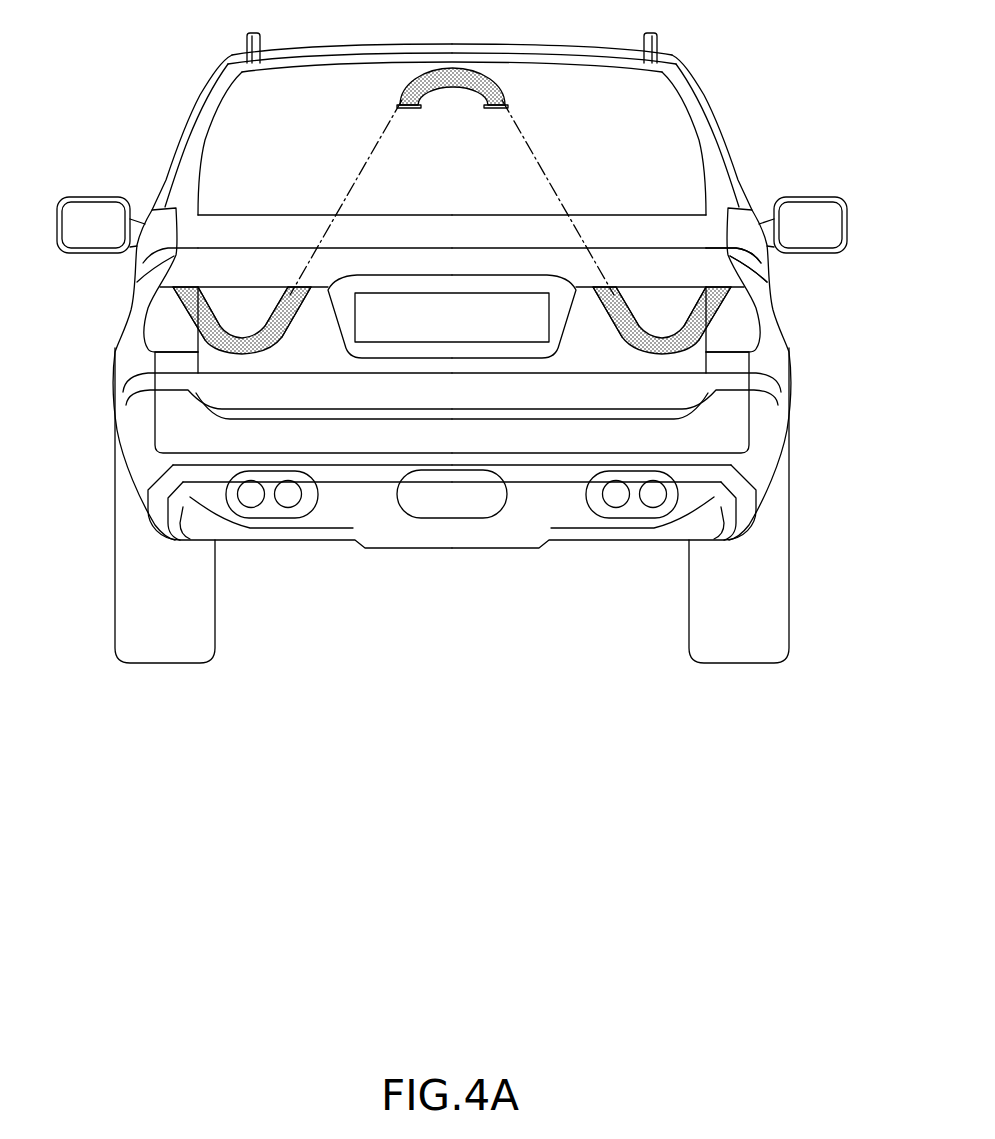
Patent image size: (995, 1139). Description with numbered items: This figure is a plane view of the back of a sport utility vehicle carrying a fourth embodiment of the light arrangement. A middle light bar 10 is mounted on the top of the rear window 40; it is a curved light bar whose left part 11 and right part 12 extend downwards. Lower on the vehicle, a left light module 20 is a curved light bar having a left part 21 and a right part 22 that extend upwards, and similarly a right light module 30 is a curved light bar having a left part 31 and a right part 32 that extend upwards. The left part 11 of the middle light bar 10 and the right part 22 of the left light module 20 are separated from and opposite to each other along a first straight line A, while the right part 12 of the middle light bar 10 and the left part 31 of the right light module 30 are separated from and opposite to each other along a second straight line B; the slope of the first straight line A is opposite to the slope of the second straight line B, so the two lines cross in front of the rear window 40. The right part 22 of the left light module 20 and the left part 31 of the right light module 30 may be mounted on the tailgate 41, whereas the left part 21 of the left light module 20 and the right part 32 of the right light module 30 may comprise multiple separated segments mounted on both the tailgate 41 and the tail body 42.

The middle light bar 10 is at (438, 68).
The left part 11 is at (401, 102).
The right part 12 is at (503, 101).
The left light module 20 is at (230, 437).
The left part 21 is at (178, 293).
The right part 22 is at (266, 355).
The right light module 30 is at (668, 433).
The left part 31 is at (601, 301).
The right part 32 is at (759, 313).
The rear window 40 is at (640, 90).
The tailgate 41 is at (634, 297).
The tail body 42 is at (772, 358).
The first straight line A is at (358, 185).
The second straight line B is at (532, 177).